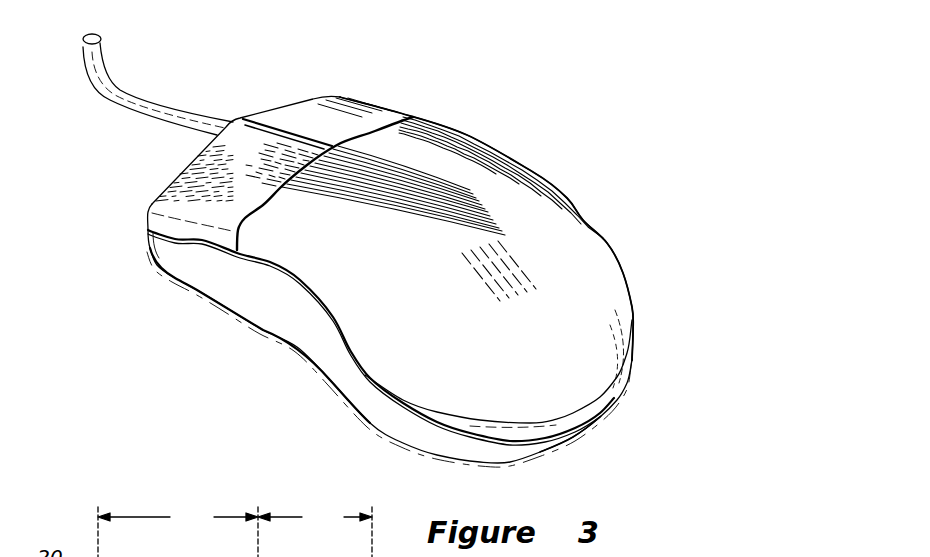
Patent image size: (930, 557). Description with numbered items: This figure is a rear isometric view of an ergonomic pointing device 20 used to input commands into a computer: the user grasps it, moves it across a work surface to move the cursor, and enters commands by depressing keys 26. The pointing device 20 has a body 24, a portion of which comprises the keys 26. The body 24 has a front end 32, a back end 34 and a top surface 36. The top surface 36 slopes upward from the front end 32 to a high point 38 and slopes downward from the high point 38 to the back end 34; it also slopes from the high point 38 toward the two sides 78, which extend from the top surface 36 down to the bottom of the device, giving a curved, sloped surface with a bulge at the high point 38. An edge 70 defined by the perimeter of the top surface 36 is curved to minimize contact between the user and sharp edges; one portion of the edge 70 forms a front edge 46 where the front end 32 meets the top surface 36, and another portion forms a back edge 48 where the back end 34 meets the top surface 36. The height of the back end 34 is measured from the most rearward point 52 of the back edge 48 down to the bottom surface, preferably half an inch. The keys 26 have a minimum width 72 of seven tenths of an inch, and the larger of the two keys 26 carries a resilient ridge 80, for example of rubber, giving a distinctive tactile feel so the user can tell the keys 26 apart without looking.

The pointing device 20 is at (542, 132).
The body 24 is at (177, 258).
The keys 26 is at (352, 120).
The front end 32 is at (280, 98).
The back end 34 is at (630, 453).
The top surface 36 is at (585, 244).
The high point 38 is at (463, 240).
The front edge 46 is at (188, 167).
The back edge 48 is at (610, 385).
The most rearward point 52 is at (553, 420).
The edge 70 is at (346, 327).
The minimum width 72 is at (235, 531).
The sides 78 is at (263, 330).
The ridge 80 is at (219, 130).